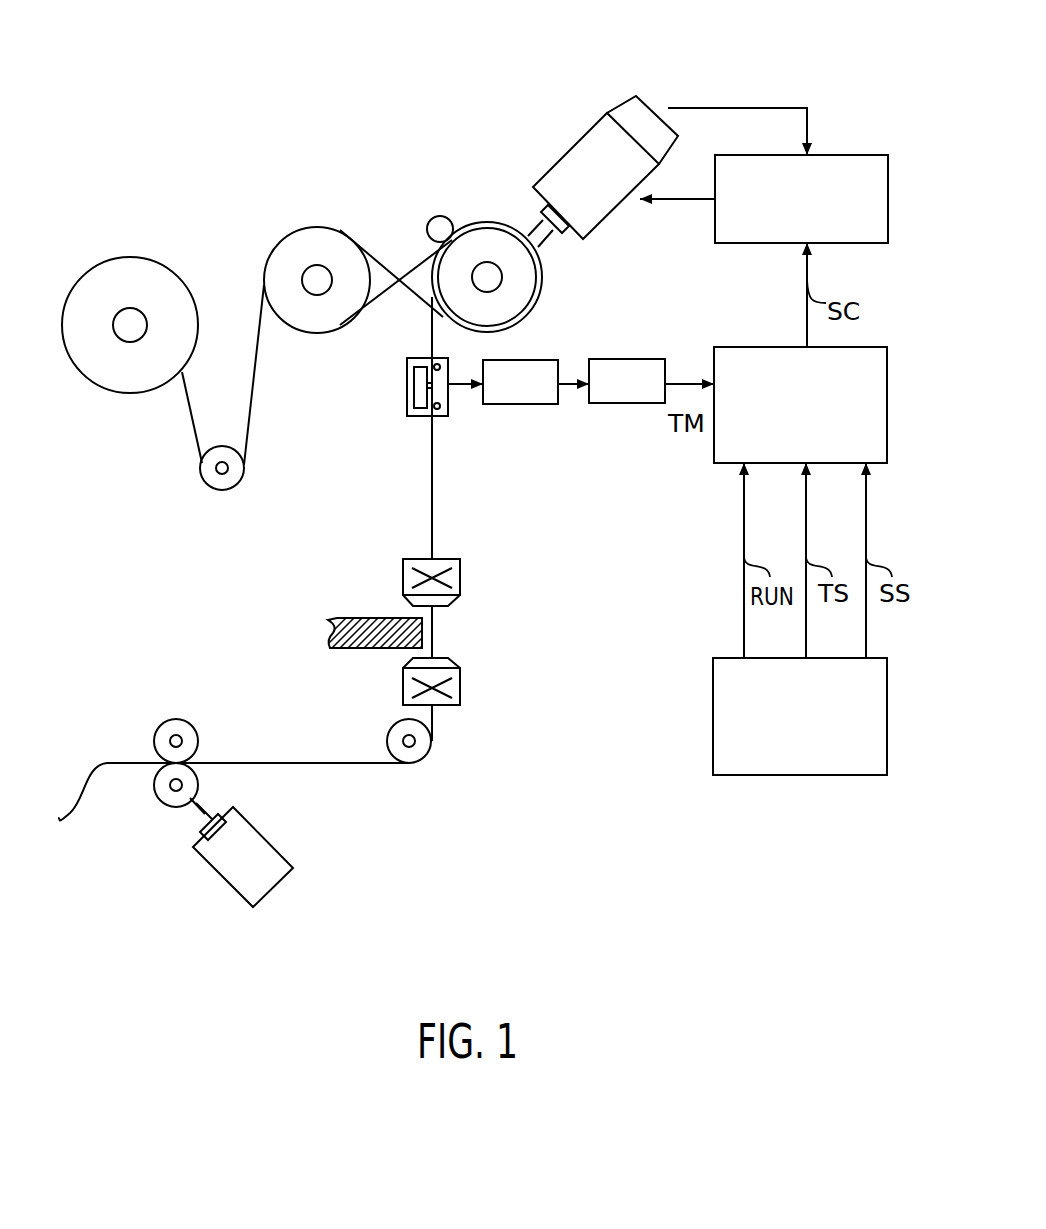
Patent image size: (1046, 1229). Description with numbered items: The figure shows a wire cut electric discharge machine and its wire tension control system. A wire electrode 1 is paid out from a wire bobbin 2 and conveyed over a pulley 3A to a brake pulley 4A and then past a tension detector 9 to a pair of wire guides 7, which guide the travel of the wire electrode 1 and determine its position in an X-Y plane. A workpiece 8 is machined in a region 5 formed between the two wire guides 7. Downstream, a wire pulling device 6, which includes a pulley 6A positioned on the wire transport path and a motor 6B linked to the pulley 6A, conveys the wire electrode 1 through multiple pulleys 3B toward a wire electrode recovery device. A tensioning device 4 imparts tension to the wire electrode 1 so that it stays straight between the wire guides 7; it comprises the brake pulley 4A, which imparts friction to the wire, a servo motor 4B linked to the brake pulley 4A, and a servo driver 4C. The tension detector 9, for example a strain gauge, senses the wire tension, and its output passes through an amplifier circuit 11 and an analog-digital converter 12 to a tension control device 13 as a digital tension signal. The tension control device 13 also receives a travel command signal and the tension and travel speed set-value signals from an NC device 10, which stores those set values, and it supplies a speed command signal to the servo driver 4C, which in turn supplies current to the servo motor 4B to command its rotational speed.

The wire electrode 1 is at (249, 433).
The wire bobbin 2 is at (112, 258).
The pulley 3A is at (285, 360).
The pulleys 3B is at (200, 725).
The tensioning device 4 is at (737, 90).
The brake pulley 4A is at (490, 222).
The servo motor 4B is at (577, 130).
The servo driver 4C is at (853, 155).
The region 5 is at (432, 638).
The wire pulling device 6 is at (260, 967).
The pulley 6A is at (153, 792).
The motor 6B is at (222, 877).
The wire guides 7 is at (465, 567).
The workpiece 8 is at (370, 620).
The tension detector 9 is at (405, 370).
The NC device 10 is at (827, 777).
The amplifier circuit 11 is at (540, 358).
The analog-digital converter 12 is at (637, 358).
The tension control device 13 is at (872, 347).